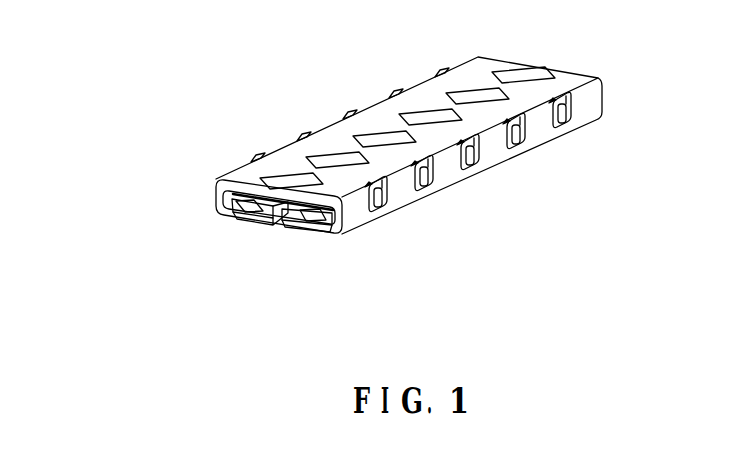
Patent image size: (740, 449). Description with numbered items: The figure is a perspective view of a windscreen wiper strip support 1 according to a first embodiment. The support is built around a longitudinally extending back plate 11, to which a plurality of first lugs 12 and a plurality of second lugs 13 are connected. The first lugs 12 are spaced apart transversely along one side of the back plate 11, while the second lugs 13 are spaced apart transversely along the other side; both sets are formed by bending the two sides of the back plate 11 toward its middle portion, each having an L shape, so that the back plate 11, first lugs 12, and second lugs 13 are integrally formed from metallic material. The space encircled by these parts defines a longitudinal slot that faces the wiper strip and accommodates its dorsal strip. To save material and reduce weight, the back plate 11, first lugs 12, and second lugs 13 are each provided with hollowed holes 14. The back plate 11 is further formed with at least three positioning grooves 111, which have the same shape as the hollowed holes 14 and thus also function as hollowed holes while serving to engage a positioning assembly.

The windscreen wiper strip support 1 is at (208, 54).
The back plate 11 is at (290, 147).
The positioning grooves 111 is at (395, 99).
The first lugs 12 is at (217, 206).
The second lugs 13 is at (320, 231).
The hollowed holes 14 is at (240, 208).